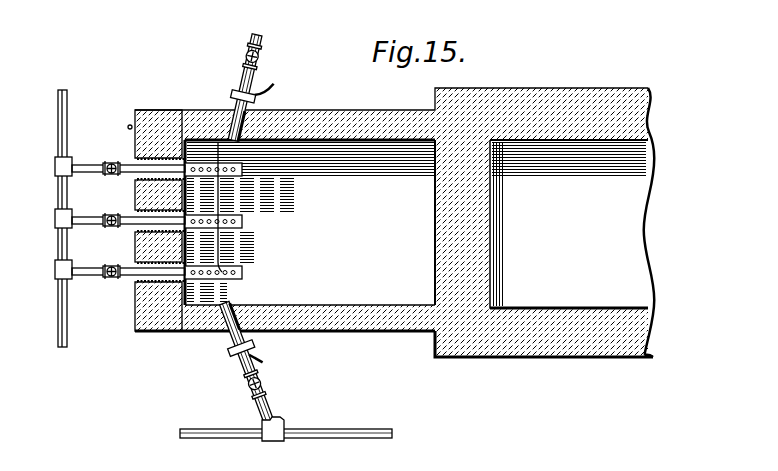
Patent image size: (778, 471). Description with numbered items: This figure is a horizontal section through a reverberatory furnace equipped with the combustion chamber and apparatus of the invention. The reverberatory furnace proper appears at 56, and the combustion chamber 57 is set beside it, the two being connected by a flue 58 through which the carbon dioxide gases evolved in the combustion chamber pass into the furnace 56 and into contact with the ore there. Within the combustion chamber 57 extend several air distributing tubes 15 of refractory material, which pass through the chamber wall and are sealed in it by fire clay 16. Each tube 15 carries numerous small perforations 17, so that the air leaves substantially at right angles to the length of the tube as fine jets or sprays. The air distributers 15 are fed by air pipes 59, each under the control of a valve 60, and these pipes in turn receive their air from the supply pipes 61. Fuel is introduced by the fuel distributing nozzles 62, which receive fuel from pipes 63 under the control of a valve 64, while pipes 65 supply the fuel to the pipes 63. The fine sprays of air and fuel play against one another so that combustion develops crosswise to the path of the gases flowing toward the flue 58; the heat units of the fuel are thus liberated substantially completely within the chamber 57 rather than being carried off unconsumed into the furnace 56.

The air distributing tubes 15 is at (243, 224).
The fire clay 16 is at (165, 109).
The perforations 17 is at (234, 232).
The reverberatory furnace 56 is at (655, 266).
The combustion chamber 57 is at (393, 331).
The flue 58 is at (503, 174).
The air pipes 59 is at (89, 266).
The valve 60 is at (109, 160).
The air supply pipes 61 is at (57, 311).
The fuel distributing nozzles 62 is at (230, 94).
The fuel pipes 63 is at (235, 58).
The valve 64 is at (244, 52).
The fuel supply pipes 65 is at (342, 428).